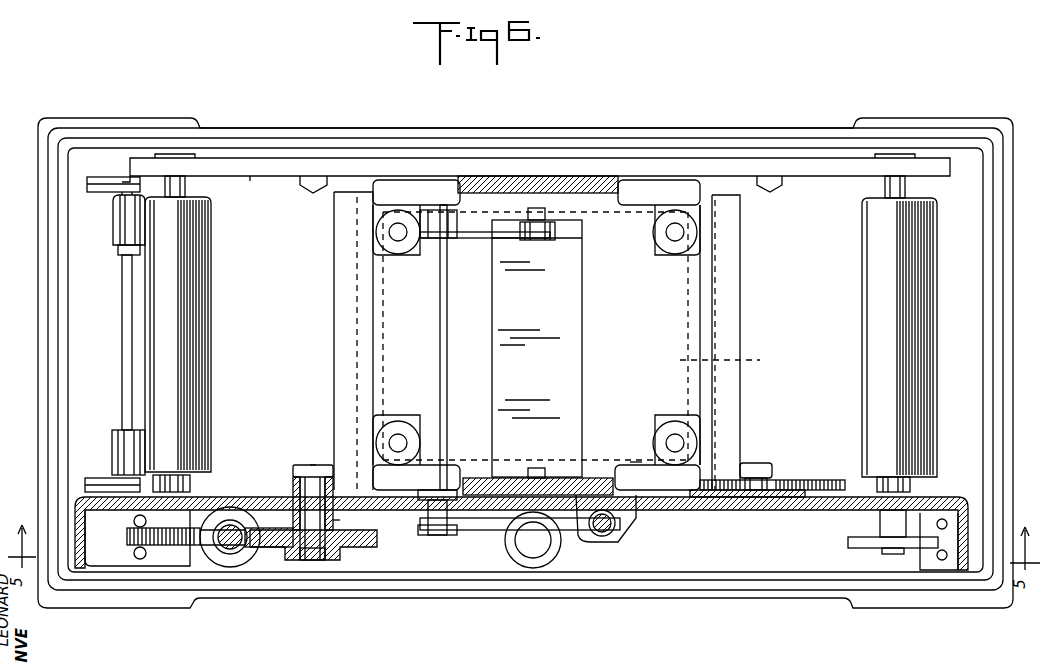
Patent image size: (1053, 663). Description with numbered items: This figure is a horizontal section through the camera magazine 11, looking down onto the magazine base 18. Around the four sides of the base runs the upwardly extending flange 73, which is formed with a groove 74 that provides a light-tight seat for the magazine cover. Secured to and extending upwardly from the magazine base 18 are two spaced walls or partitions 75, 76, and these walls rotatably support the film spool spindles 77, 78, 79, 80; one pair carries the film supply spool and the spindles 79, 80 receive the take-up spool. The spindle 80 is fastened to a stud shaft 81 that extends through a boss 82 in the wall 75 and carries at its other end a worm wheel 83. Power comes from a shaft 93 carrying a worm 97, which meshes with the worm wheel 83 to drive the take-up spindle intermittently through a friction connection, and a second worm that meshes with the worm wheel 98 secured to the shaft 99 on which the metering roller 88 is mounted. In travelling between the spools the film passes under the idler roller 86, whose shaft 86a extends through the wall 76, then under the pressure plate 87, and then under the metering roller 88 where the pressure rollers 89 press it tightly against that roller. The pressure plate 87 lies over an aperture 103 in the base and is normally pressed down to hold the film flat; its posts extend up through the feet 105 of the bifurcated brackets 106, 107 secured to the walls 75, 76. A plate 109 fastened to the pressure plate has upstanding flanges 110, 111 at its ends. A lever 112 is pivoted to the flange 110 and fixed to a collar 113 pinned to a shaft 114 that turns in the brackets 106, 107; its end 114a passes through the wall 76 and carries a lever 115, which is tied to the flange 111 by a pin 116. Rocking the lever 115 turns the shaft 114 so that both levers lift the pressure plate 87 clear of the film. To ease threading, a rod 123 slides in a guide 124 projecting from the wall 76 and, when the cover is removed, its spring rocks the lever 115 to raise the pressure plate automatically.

The apparatus 11 is at (796, 122).
The magazine base 18 is at (825, 192).
The upwardly extending flange 73 is at (483, 131).
The groove 74 is at (597, 131).
The wall 75 is at (256, 176).
The wall 76 is at (205, 497).
The film spool spindle 77 is at (760, 462).
The film spool spindle 78 is at (768, 192).
The film spool spindle 79 is at (313, 194).
The film spool spindle 80 is at (310, 463).
The stud shaft 81 is at (295, 482).
The boss 82 is at (335, 522).
The worm wheel 83 is at (350, 547).
The idler roller 86 is at (860, 306).
The shaft 86a is at (920, 500).
The pressure plate 87 is at (744, 298).
The metering roller 88 is at (212, 372).
The pressure rollers 89 is at (118, 225).
The shaft 93 is at (228, 548).
The worm 97 is at (245, 556).
The worm wheel 98 is at (125, 538).
The shaft 99 is at (200, 542).
The aperture 103 is at (738, 359).
The feet 105 is at (400, 256).
The bifurcated bracket 106 is at (618, 192).
The bifurcated bracket 107 is at (636, 462).
The plate 109 is at (584, 360).
The upstanding flange 110 is at (560, 218).
The upstanding flange 111 is at (570, 470).
The lever 112 is at (505, 240).
The collar 113 is at (458, 222).
The shaft 114 is at (448, 352).
The end of shaft 114a is at (425, 530).
The lever 115 is at (475, 530).
The pin 116 is at (540, 466).
The rod 123 is at (615, 527).
The guide 124 is at (555, 532).